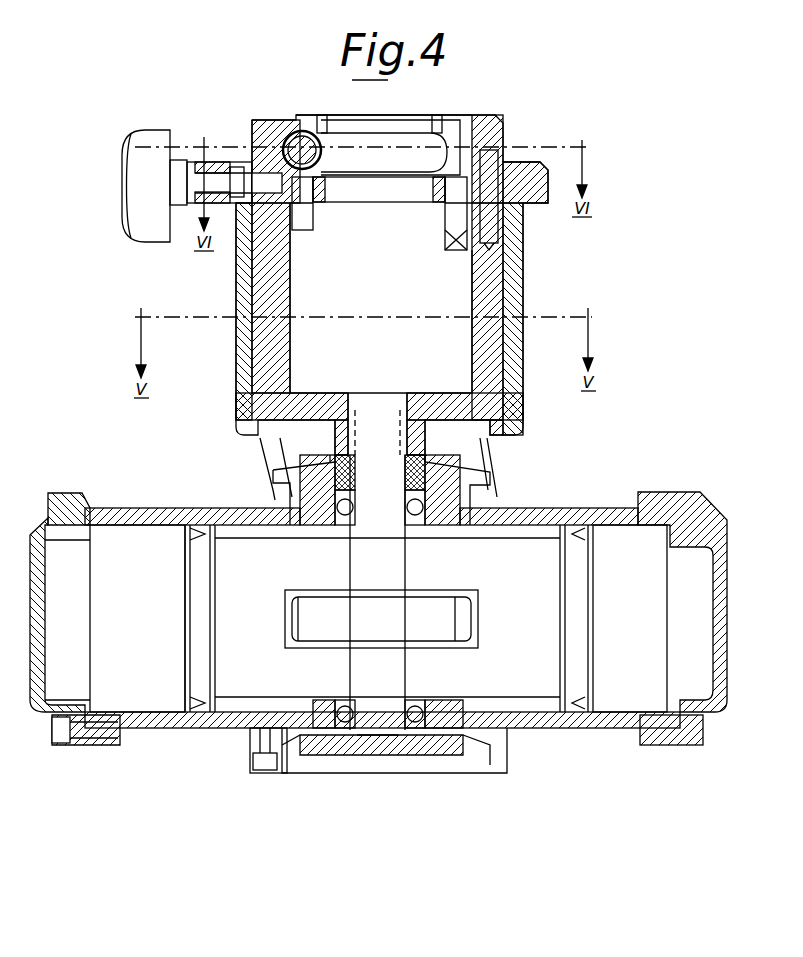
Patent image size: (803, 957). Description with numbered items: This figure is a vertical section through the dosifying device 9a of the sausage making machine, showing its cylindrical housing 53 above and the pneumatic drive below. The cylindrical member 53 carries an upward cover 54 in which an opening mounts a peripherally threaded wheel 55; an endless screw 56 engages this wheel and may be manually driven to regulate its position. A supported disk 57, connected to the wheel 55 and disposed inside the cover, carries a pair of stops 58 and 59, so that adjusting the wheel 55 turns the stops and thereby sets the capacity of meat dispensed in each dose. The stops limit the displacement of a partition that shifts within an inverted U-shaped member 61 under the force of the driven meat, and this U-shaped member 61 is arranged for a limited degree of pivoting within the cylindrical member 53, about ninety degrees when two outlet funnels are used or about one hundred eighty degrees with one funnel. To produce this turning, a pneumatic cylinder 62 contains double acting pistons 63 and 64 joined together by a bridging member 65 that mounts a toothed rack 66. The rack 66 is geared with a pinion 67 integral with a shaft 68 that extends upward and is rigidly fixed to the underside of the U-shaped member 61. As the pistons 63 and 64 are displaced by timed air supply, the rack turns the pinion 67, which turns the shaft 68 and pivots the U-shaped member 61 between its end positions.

The dosifying device 9a is at (212, 287).
The cylindrical housing 53 is at (510, 362).
The upward cover 54 is at (257, 122).
The peripherally threaded wheel 55 is at (413, 140).
The endless screw 56 is at (303, 140).
The supported disk 57 is at (397, 190).
The stop 58 is at (301, 210).
The stop 59 is at (462, 254).
The inverted U-shaped member 61 is at (493, 288).
The pneumatic cylinder 62 is at (183, 728).
The double acting piston 63 is at (128, 692).
The double acting piston 64 is at (628, 685).
The bridging member 65 is at (523, 677).
The toothed rack 66 is at (463, 648).
The pinion 67 is at (327, 623).
The shaft 68 is at (385, 575).